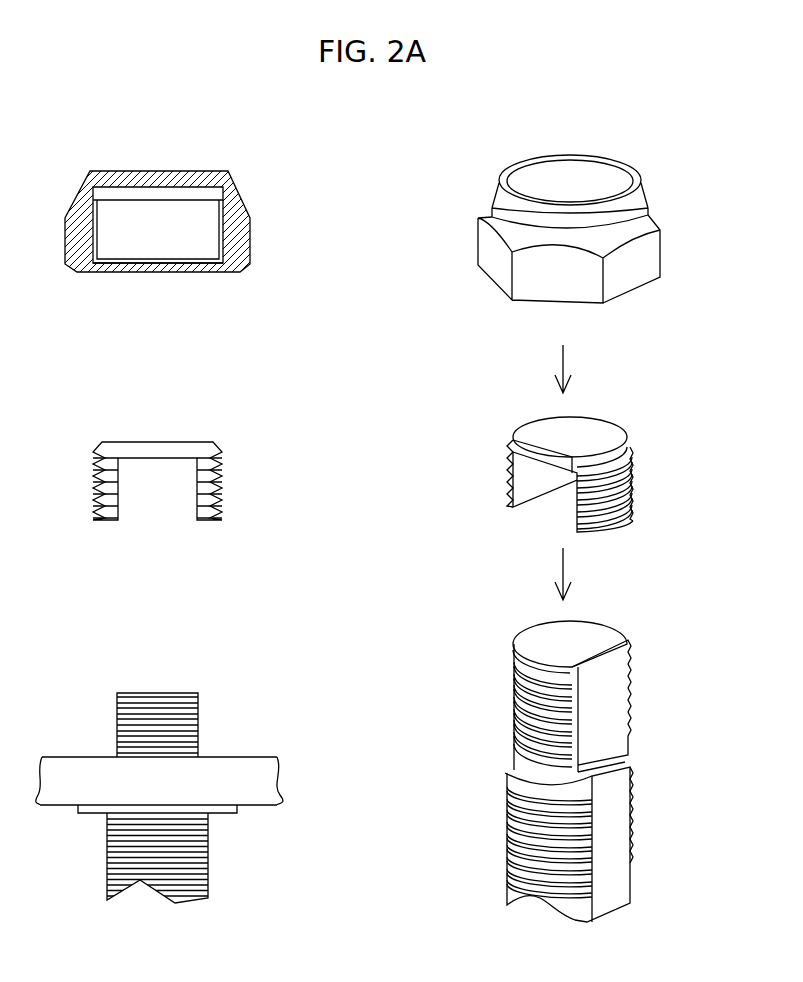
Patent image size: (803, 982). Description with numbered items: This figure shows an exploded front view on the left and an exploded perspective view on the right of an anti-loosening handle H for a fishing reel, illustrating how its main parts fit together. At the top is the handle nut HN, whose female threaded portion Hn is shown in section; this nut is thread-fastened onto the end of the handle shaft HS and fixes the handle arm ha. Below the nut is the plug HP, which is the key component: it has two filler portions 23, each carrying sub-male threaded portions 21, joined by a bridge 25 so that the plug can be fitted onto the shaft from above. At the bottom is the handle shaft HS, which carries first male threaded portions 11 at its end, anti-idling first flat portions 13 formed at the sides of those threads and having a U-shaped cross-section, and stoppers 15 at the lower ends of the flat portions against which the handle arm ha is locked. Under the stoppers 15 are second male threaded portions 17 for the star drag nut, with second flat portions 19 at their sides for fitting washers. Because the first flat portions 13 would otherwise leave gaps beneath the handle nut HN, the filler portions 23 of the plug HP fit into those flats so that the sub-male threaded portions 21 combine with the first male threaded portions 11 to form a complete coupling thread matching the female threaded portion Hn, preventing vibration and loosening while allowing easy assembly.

The handle H is at (68, 142).
The female threaded portion Hn is at (102, 232).
The handle nut HN is at (485, 242).
The plug HP is at (508, 475).
The bridge 25 is at (592, 437).
The sub-male threaded portions 21 is at (633, 477).
The filler portions 23 is at (578, 503).
The handle arm ha is at (81, 767).
The handle shaft HS is at (198, 717).
The first male threaded portions 11 is at (512, 701).
The first flat portions 13 is at (607, 690).
The stoppers 15 is at (157, 813).
The second male threaded portions 17 is at (507, 850).
The second flat portions 19 is at (615, 847).